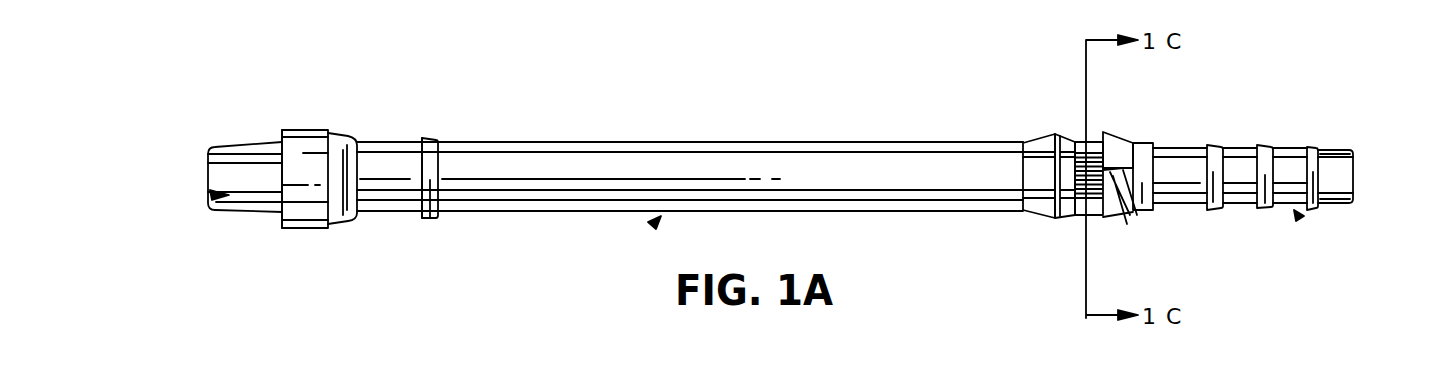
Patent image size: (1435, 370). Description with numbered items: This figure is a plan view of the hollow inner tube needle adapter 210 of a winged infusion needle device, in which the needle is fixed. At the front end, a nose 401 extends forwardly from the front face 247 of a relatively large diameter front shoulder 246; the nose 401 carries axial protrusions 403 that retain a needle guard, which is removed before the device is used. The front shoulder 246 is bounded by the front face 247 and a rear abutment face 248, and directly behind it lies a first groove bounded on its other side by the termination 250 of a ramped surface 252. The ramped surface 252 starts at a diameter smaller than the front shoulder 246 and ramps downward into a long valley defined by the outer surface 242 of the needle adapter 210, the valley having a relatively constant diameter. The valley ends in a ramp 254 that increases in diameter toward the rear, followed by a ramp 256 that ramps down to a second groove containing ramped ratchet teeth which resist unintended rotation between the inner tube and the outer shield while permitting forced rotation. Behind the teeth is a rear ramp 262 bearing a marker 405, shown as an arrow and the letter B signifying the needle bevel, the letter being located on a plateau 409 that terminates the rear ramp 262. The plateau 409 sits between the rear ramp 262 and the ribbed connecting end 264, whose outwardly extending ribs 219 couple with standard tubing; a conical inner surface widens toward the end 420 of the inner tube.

The hollow inner tube needle adapter 210 is at (655, 222).
The ribs 219 is at (1315, 146).
The outer surface 242 is at (622, 140).
The front shoulder 246 is at (311, 130).
The front face 247 is at (283, 133).
The rear abutment face 248 is at (355, 138).
The termination (rear abutment face) of ramped surface 250 is at (423, 139).
The ramped surface 252 is at (433, 137).
The ramp 254 is at (1030, 137).
The ramp 256 is at (1067, 138).
The rear ramp 262 is at (1118, 134).
The ribbed connecting end 264 is at (1297, 214).
The nose 401 is at (248, 213).
The axial protrusions 403 is at (226, 195).
The marker or indicator 405 is at (1143, 200).
The plateau 409 is at (1150, 208).
The end of the inner tube 420 is at (1355, 166).